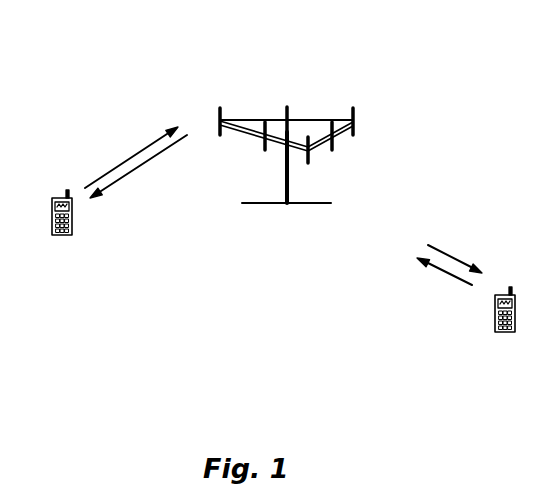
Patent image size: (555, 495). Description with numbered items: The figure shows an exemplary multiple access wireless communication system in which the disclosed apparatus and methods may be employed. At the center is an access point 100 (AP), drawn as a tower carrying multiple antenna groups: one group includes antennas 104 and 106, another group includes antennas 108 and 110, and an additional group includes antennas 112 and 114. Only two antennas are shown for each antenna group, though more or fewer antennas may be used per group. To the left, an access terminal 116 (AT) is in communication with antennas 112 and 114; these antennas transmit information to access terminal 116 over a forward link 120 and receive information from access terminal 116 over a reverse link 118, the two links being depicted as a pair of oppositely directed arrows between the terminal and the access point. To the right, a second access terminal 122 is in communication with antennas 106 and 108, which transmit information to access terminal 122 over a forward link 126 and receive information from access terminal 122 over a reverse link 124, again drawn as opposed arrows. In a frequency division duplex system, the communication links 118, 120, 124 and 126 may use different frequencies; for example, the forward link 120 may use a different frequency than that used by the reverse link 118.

The access point 100 is at (273, 203).
The antenna 104 is at (308, 163).
The antenna 106 is at (333, 146).
The antenna 108 is at (357, 133).
The antenna 110 is at (288, 107).
The antenna 112 is at (221, 116).
The antenna 114 is at (265, 150).
The access terminal 116 is at (66, 198).
The reverse link 118 is at (134, 157).
The forward link 120 is at (143, 164).
The access terminal 122 is at (503, 293).
The reverse link 124 is at (440, 270).
The forward link 126 is at (456, 260).